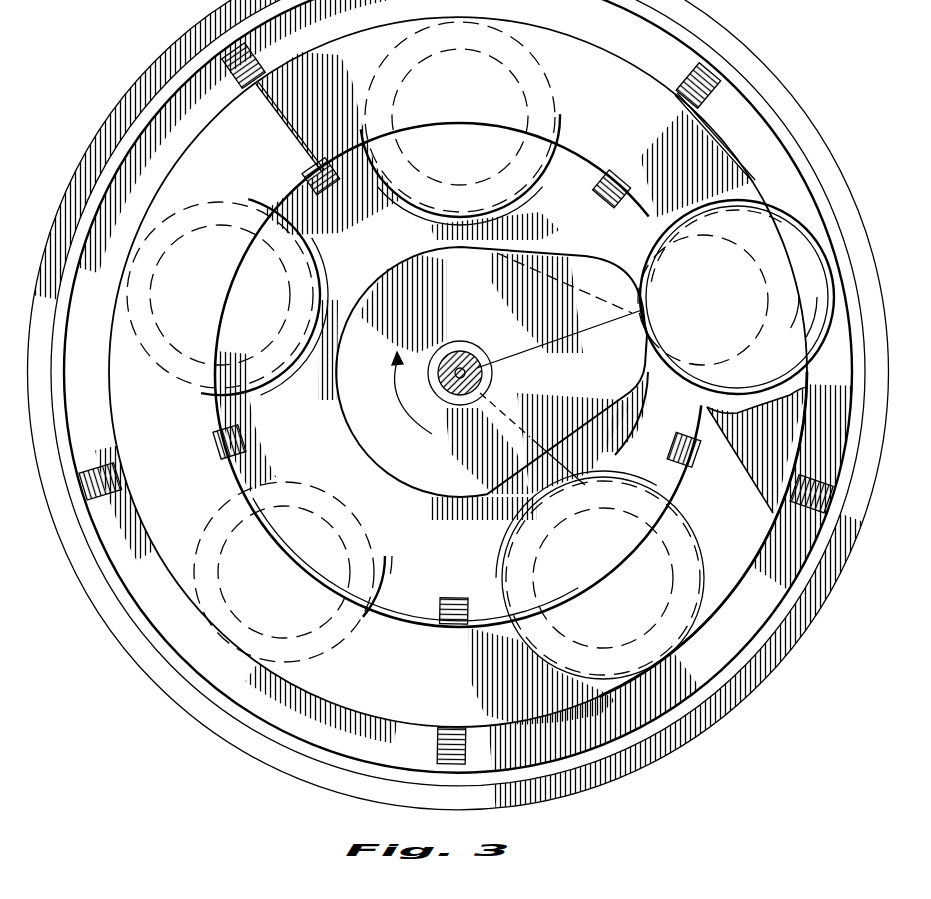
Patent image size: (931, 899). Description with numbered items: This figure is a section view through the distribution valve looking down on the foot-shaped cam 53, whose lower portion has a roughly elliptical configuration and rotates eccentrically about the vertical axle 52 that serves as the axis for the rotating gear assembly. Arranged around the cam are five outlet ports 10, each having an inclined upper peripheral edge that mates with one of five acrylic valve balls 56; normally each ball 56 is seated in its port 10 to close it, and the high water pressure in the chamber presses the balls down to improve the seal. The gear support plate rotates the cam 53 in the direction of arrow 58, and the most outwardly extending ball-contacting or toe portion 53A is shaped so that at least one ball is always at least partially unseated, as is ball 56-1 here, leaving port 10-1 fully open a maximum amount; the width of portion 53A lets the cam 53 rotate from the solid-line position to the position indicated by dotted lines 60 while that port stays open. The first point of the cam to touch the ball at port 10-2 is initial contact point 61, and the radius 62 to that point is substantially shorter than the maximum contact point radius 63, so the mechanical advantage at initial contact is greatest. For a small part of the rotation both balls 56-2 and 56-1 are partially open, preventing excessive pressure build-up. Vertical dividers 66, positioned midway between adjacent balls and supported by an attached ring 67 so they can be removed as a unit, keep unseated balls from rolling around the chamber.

The outlet port 10 is at (527, 97).
The outlet port 10-1 is at (650, 256).
The outlet port 10-2 is at (545, 641).
The vertical axle 52 is at (464, 360).
The cam 53 is at (411, 470).
The ball-contacting portion 53A is at (640, 382).
The valve ball 56 is at (410, 183).
The valve ball 56-1 is at (768, 216).
The valve ball 56-2 is at (692, 532).
The arrow 58 is at (407, 408).
The dotted lines 60 is at (623, 455).
The initial contact point 61 is at (588, 492).
The radius 62 is at (530, 434).
The maximum contact point radius 63 is at (612, 327).
The vertical divider 66 is at (705, 93).
The ring 67 is at (717, 595).